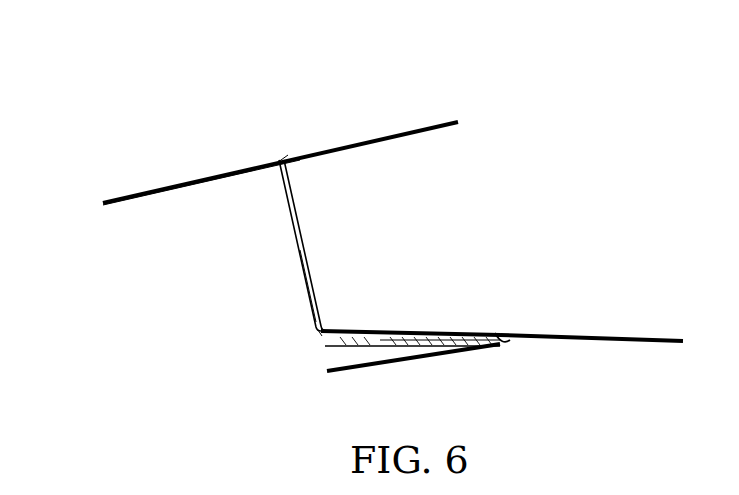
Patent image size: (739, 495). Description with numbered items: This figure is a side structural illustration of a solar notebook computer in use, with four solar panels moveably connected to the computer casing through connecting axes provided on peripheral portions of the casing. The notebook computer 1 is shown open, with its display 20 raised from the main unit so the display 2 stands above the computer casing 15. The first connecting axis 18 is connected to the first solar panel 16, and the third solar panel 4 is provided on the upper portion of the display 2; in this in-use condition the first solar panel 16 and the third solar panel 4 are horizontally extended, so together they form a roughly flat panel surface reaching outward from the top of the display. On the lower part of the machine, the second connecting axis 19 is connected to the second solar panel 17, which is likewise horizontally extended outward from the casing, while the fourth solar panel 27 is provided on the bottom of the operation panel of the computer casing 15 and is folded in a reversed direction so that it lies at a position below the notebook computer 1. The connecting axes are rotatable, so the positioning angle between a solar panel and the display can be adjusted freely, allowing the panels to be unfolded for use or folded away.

The notebook computer 1 is at (303, 338).
The display 2 is at (285, 252).
The third solar panel 4 is at (190, 178).
The computer casing 15 is at (408, 330).
The first solar panel 16 is at (380, 130).
The second solar panel 17 is at (588, 332).
The first connecting axis 18 is at (277, 150).
The second connecting axis 19 is at (500, 327).
The display 20 is at (320, 278).
The fourth solar panel 27 is at (457, 357).